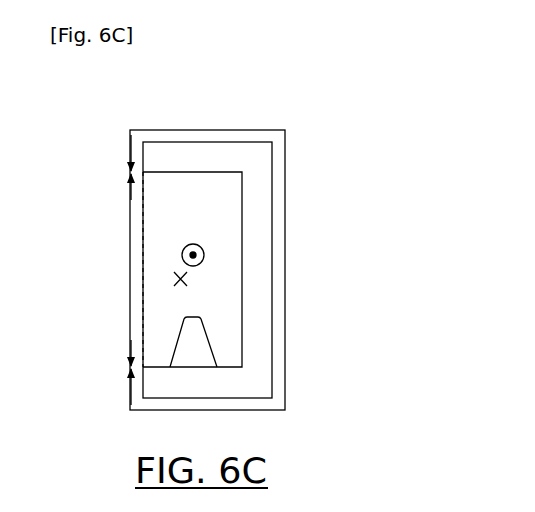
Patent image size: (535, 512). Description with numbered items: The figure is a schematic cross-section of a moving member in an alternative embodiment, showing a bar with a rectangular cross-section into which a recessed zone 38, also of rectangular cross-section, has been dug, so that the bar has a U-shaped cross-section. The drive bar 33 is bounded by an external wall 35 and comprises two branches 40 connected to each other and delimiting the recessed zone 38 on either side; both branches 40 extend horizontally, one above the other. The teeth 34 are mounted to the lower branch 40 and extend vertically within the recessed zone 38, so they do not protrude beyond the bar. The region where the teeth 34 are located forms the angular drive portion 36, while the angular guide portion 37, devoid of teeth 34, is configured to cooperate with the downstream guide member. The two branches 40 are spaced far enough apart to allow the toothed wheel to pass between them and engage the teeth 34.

The drive bar 33 is at (111, 151).
The teeth 34 is at (202, 328).
The external wall 35 is at (285, 367).
The angular drive portion 36 is at (112, 270).
The angular guide portion 37 is at (230, 270).
The recessed zone 38 is at (224, 192).
The branches 40 is at (204, 165).